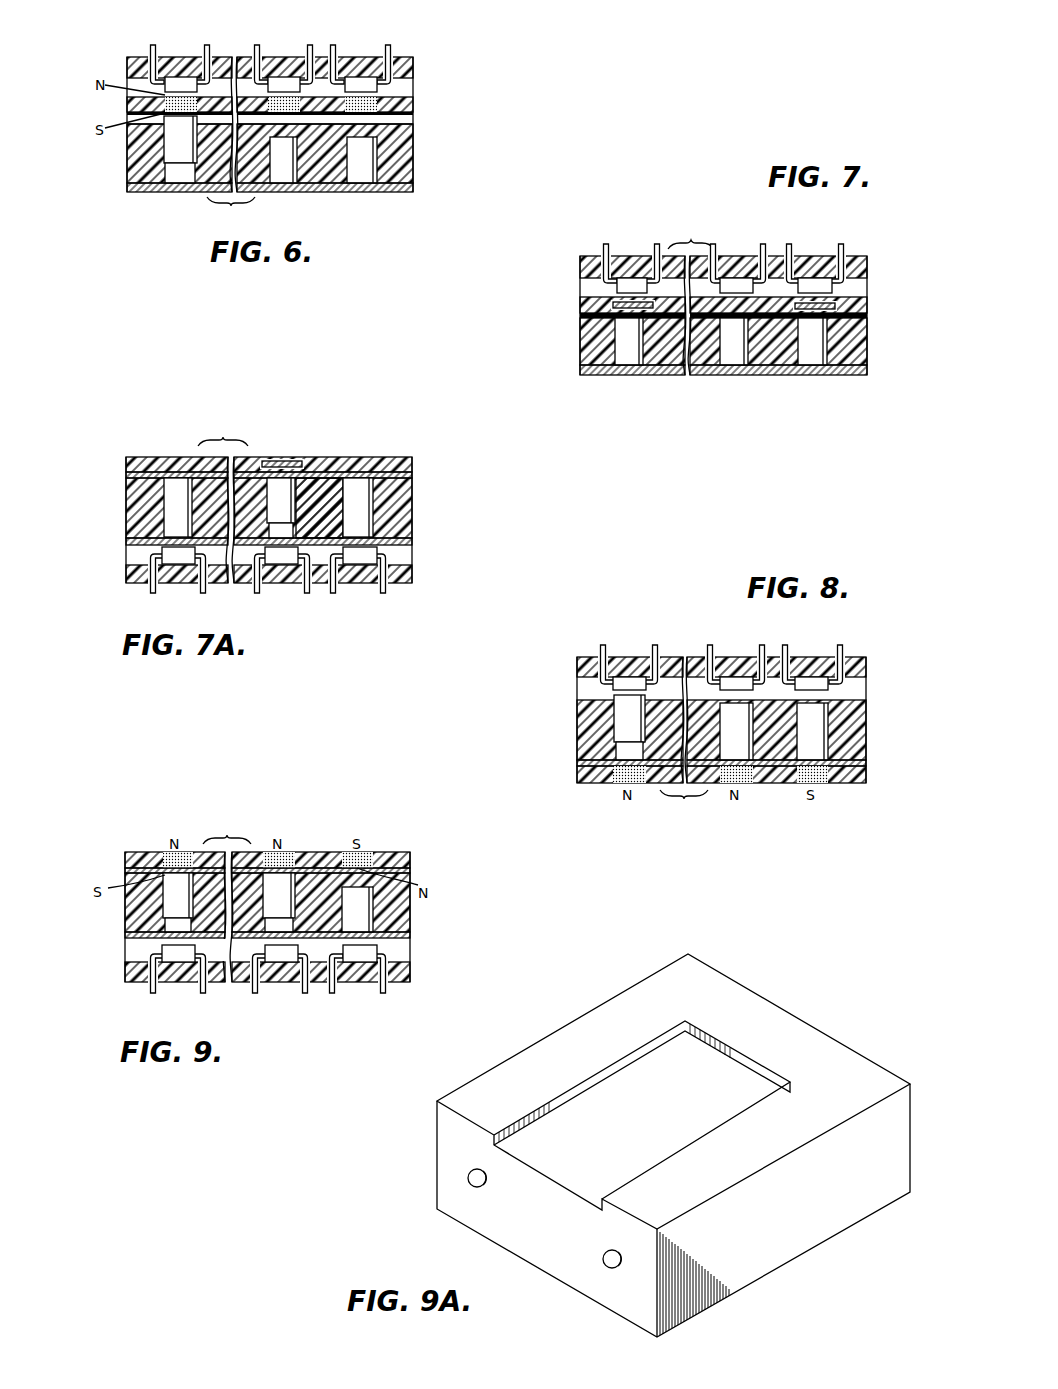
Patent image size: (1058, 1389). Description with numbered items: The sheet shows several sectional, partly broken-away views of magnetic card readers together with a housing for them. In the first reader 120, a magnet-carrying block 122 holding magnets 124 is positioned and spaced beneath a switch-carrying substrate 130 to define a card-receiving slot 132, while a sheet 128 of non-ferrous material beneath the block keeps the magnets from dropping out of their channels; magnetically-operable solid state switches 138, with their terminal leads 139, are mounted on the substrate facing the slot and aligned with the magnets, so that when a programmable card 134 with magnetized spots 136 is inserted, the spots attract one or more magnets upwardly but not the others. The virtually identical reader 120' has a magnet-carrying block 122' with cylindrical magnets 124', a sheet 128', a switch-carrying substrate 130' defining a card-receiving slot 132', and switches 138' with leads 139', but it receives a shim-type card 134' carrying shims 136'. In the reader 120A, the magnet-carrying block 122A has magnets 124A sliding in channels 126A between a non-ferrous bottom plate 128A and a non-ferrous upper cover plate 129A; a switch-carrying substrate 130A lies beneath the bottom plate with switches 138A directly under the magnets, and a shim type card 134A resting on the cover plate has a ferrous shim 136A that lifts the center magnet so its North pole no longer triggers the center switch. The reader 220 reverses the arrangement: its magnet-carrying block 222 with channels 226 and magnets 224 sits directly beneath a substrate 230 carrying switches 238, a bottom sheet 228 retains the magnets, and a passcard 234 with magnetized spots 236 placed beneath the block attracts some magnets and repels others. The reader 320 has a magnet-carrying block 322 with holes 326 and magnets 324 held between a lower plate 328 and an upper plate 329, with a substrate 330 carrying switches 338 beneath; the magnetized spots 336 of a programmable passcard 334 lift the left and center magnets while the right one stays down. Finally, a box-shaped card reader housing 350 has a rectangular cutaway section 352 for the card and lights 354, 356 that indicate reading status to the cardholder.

In FIG. 6, the card reader 120 is at (326, 131).
In FIG. 6, the magnet-carrying block 122 is at (304, 153).
In FIG. 6, the magnets 124 is at (223, 149).
In FIG. 6, the sheet of non-ferrous material 128 is at (286, 205).
In FIG. 6, the switch-carrying substrate 130 is at (304, 64).
In FIG. 6, the card-receiving slot 132 is at (308, 112).
In FIG. 6, the card 134 is at (304, 96).
In FIG. 6, the magnetized spots 136 is at (216, 107).
In FIG. 6, the magnetically-operable solid state switches 138 is at (271, 46).
In FIG. 6, the terminal leads 139 is at (270, 42).
In FIG. 7, the card reader 120' is at (683, 307).
In FIG. 7, the magnet-carrying block 122' is at (757, 343).
In FIG. 7, the magnets 124' is at (715, 377).
In FIG. 7, the sheet 128' is at (690, 390).
In FIG. 7, the switch-carrying substrate 130' is at (758, 257).
In FIG. 7, the card-receiving slot 132' is at (690, 340).
In FIG. 7, the shim-type card 134' is at (759, 298).
In FIG. 7, the shims 136' is at (675, 289).
In FIG. 7, the magnetically-operable solid state switches 138' is at (724, 247).
In FIG. 7, the terminal leads 139' is at (723, 242).
In FIG. 7A, the card reader 120A is at (432, 513).
In FIG. 7A, the magnet-carrying block 122A is at (137, 493).
In FIG. 7A, the magnets 124A is at (268, 490).
In FIG. 7A, the channels 126A is at (365, 447).
In FIG. 7A, the non-ferrous bottom plate 128A is at (135, 542).
In FIG. 7A, the non-ferrous upper cover plate 129A is at (413, 475).
In FIG. 7A, the switch-carrying substrate 130A is at (405, 572).
In FIG. 7A, the shim type card 134A is at (380, 463).
In FIG. 7A, the ferrous shim 136A is at (290, 460).
In FIG. 7A, the magnetically-operable solid state switches 138A is at (360, 558).
In FIG. 8, the card reader 220 is at (569, 693).
In FIG. 8, the magnet-carrying block 222 is at (860, 720).
In FIG. 8, the magnets 224 is at (618, 715).
In FIG. 8, the channels 226 is at (623, 748).
In FIG. 8, the bottom sheet of non-ferrous material 228 is at (862, 760).
In FIG. 8, the substrate 230 is at (858, 667).
In FIG. 8, the passcard 234 is at (850, 778).
In FIG. 8, the magnetized spots 236 is at (802, 780).
In FIG. 8, the magnetically-operable solid state switches 238 is at (727, 678).
In FIG. 9, the card reader 320 is at (189, 827).
In FIG. 9, the magnet-carrying block 322 is at (402, 908).
In FIG. 9, the magnets 324 is at (165, 900).
In FIG. 9, the holes or channels 326 is at (165, 938).
In FIG. 9, the lower plate 328 is at (393, 938).
In FIG. 9, the upper plate 329 is at (413, 872).
In FIG. 9, the substrate 330 is at (135, 963).
In FIG. 9, the passcard 334 is at (395, 858).
In FIG. 9, the magnetized spots 336 is at (347, 857).
In FIG. 9, the magnetically-operable solid state switches 338 is at (355, 960).
In FIG. 9A, the card reader housing 350 is at (840, 1014).
In FIG. 9A, the cutaway section 352 is at (554, 1120).
In FIG. 9A, the light 354 is at (467, 1180).
In FIG. 9A, the light 356 is at (610, 1270).